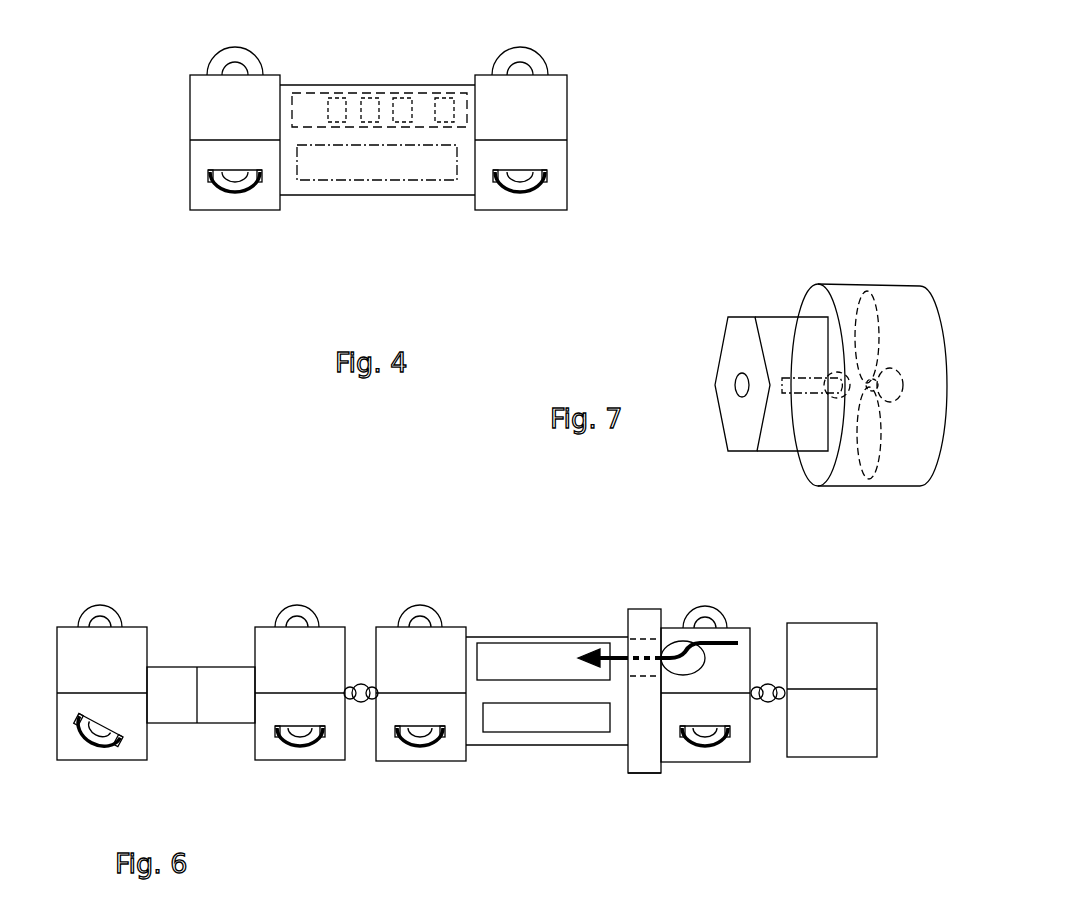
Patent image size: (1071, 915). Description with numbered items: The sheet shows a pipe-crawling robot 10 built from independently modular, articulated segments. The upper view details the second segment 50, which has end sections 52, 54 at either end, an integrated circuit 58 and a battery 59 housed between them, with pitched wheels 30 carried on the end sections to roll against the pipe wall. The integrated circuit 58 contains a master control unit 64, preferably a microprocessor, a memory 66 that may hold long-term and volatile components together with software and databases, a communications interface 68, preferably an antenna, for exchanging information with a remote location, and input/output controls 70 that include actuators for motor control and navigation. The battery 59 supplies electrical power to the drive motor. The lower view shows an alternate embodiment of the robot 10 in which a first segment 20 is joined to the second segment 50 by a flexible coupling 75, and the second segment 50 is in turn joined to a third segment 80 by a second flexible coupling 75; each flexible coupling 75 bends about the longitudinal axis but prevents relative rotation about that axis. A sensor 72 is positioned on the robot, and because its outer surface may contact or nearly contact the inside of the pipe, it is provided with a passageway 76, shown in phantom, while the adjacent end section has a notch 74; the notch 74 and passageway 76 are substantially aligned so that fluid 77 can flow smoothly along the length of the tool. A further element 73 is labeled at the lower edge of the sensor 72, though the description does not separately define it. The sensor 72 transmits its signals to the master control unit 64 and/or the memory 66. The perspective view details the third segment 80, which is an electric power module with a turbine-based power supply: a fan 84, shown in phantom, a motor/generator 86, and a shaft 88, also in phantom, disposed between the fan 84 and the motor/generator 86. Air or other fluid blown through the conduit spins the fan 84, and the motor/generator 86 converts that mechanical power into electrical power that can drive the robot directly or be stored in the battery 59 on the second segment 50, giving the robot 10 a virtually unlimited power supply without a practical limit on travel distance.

In FIG. 6, the pipe-crawling robot 10 is at (200, 588).
In FIG. 6, the first segment 20 is at (210, 787).
In FIG. 4, the pitched wheels 30 is at (235, 62).
In FIG. 4, the second segment 50 is at (343, 227).
In FIG. 6, the second segment 50 is at (525, 780).
In FIG. 4, the end section 52 is at (190, 110).
In FIG. 4, the end section 54 is at (567, 124).
In FIG. 4, the integrated circuit 58 is at (305, 93).
In FIG. 4, the battery 59 is at (395, 173).
In FIG. 4, the master control unit 64 is at (336, 98).
In FIG. 4, the memory 66 is at (370, 98).
In FIG. 4, the communications interface 68 is at (401, 98).
In FIG. 4, the input/output (I/O) controls 70 is at (446, 98).
In FIG. 6, the sensor 72 is at (628, 752).
In FIG. 6, the plate base 73 is at (655, 776).
In FIG. 6, the notch 74 is at (670, 645).
In FIG. 6, the flexible coupling 75 is at (360, 683).
In FIG. 6, the passageway 76 is at (645, 639).
In FIG. 6, the fluid 77 is at (620, 650).
In FIG. 7, the third segment 80 is at (840, 285).
In FIG. 6, the third segment 80 is at (825, 795).
In FIG. 7, the fan 84 is at (850, 468).
In FIG. 7, the motor/generator 86 is at (770, 455).
In FIG. 6, the motor/generator 86 is at (800, 623).
In FIG. 7, the shaft 88 is at (800, 378).